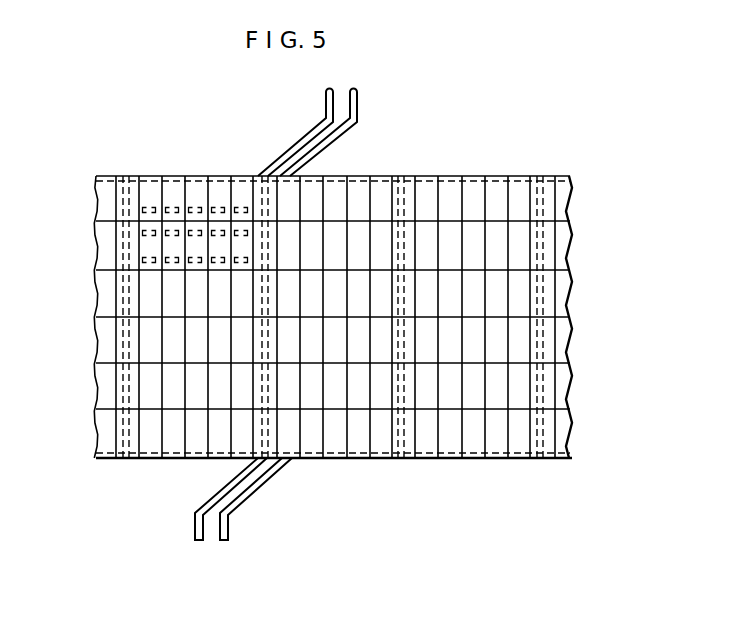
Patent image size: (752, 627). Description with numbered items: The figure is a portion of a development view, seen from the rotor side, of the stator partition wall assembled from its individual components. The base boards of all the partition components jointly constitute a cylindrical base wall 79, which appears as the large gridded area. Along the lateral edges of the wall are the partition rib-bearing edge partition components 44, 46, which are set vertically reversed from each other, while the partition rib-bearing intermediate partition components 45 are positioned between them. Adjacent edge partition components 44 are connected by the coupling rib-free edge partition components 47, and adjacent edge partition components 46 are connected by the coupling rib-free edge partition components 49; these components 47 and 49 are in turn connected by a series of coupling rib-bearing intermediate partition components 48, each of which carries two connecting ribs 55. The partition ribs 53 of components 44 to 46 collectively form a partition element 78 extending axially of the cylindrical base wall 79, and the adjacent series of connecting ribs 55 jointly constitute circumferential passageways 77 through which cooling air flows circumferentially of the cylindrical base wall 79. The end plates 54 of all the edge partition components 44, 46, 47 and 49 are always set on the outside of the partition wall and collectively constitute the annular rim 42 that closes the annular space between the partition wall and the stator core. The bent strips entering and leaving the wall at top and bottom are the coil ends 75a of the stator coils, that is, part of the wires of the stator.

The annular rim 42 is at (487, 176).
The partition rib-bearing edge partition component 44 is at (254, 177).
The partition rib-bearing intermediate partition component 45 is at (140, 245).
The partition rib-bearing edge partition component 46 is at (117, 440).
The coupling rib-free edge partition component 47 is at (170, 177).
The coupling rib-bearing intermediate partition component 48 is at (235, 253).
The coupling rib-free edge partition component 49 is at (215, 460).
The partition rib 53 is at (122, 248).
The end plate 54 is at (133, 177).
The connecting rib 55 is at (243, 205).
The coil ends of the stator coils 75a is at (358, 104).
The circumferential passageway 77 is at (268, 222).
The partition element 78 is at (117, 188).
The cylindrical base wall 79 is at (580, 307).